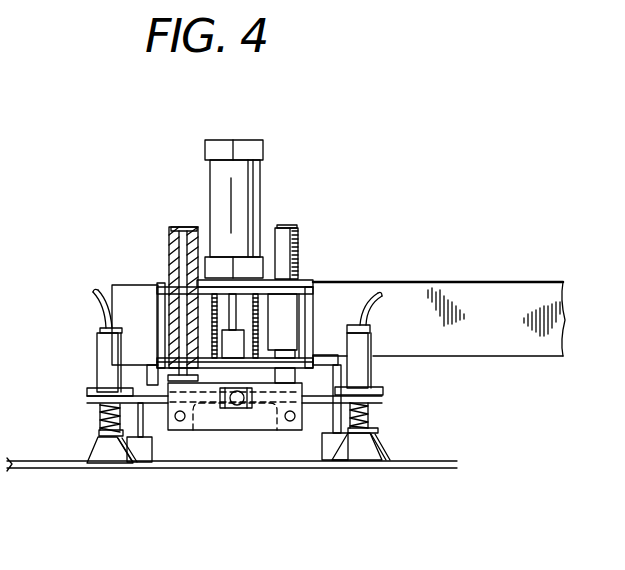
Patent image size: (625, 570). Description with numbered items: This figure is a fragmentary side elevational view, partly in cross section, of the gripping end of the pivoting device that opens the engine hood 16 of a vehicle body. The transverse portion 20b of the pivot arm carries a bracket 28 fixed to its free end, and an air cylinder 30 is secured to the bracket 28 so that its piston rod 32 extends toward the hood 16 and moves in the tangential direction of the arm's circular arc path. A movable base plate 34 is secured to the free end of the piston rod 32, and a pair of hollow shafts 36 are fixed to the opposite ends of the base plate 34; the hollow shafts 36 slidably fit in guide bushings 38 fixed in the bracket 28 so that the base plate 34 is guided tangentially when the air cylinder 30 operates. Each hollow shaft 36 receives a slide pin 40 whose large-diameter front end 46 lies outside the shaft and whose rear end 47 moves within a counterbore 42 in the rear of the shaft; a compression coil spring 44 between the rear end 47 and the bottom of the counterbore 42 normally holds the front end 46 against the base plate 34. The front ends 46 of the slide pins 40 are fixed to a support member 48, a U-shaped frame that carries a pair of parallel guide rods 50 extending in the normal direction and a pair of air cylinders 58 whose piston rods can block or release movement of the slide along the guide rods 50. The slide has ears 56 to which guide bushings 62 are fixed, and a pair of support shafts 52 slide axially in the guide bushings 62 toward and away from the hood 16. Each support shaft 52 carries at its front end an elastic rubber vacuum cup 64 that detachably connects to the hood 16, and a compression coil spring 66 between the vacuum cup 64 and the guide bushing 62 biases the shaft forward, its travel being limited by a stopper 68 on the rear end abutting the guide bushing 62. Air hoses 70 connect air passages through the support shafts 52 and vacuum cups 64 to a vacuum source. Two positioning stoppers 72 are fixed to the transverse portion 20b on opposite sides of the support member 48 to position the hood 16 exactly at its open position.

The engine hood 16 is at (435, 470).
The transverse portion 20b is at (474, 285).
The bracket 28 is at (303, 279).
The air cylinder 30 is at (242, 177).
The piston rod 32 is at (237, 315).
The movable base plate 34 is at (333, 344).
The hollow shafts 36 is at (286, 227).
The guide bushings 38 is at (165, 277).
The slide pins 40 is at (157, 307).
The counterbore 42 is at (174, 245).
The compression coil spring 44 is at (190, 240).
The large-diameter front end 46 is at (147, 378).
The rear end 47 is at (180, 228).
The support member 48 is at (228, 423).
The guide rods 50 is at (180, 421).
The support shafts 52 is at (101, 432).
The ears 56 is at (92, 400).
The air cylinders 58 is at (243, 402).
The guide bushings 62 is at (103, 358).
The vacuum cup 64 is at (103, 456).
The compression coil spring 66 is at (101, 417).
The stopper 68 is at (100, 332).
The air hoses 70 is at (92, 298).
The positioning stoppers 72 is at (143, 452).